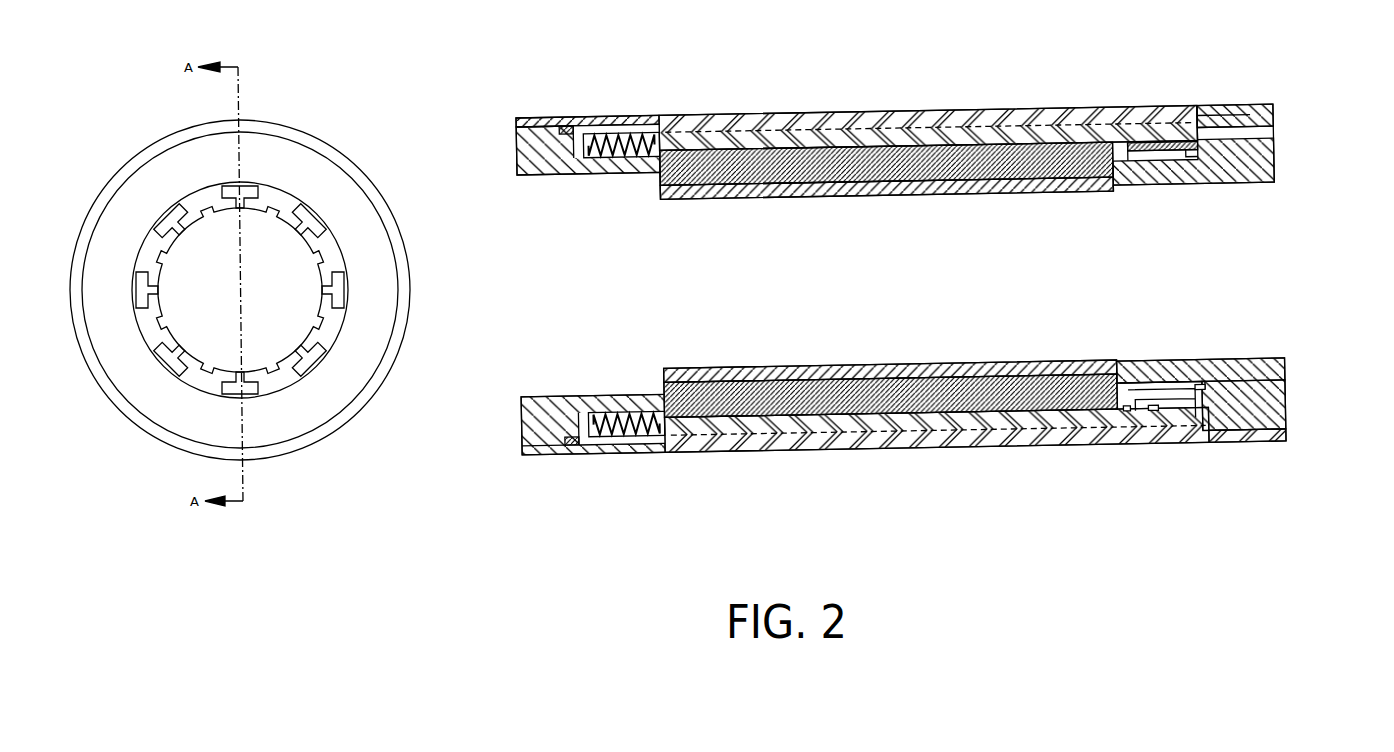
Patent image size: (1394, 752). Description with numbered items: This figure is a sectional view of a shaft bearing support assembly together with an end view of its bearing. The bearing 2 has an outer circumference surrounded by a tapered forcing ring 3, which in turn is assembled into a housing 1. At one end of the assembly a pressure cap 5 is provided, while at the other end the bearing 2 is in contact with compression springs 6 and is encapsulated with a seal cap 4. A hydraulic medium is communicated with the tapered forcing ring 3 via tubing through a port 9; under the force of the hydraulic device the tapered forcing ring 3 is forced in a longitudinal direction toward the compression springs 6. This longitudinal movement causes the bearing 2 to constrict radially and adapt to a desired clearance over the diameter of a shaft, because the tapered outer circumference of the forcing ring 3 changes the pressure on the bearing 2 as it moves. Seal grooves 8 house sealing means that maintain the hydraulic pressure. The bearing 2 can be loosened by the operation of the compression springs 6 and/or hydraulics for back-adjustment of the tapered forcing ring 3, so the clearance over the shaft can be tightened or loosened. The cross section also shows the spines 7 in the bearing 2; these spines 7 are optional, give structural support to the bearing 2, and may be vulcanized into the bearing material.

The housing 1 is at (516, 120).
The bearing 2 is at (748, 200).
The tapered forcing ring 3 is at (1075, 143).
The seal cap 4 is at (516, 155).
The pressure cap 5 is at (1273, 107).
The compression springs 6 is at (608, 136).
The spines 7 is at (309, 213).
The seal grooves 8 is at (1196, 423).
The port 9 is at (1273, 140).